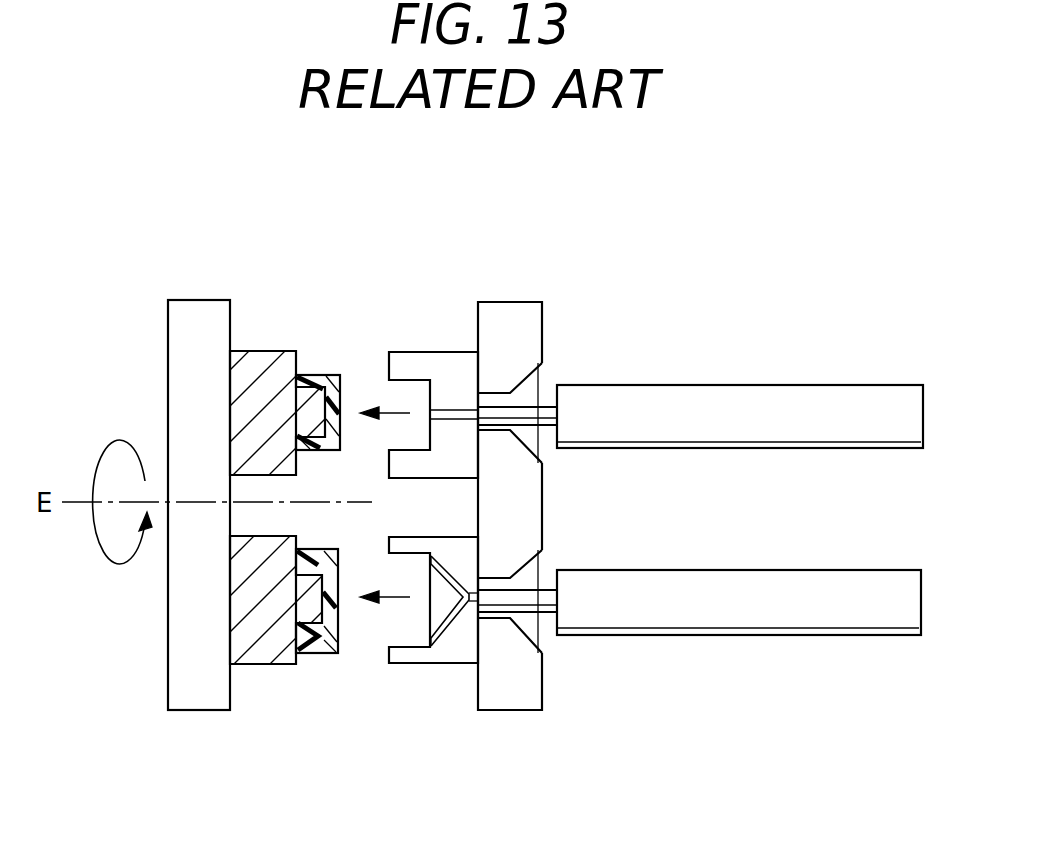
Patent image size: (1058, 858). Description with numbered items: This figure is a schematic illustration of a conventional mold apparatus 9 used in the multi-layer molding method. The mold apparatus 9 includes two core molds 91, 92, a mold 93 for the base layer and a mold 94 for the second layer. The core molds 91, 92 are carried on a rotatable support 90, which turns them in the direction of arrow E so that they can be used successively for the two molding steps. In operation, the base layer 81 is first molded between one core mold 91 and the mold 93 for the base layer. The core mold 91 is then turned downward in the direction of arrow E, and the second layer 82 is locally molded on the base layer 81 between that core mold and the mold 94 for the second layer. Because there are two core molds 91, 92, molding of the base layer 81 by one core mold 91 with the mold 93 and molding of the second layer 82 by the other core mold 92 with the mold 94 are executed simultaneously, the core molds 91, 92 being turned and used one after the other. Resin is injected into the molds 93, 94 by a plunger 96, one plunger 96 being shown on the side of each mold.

The mold apparatus 9 is at (515, 272).
The rotary base plate 90 is at (177, 347).
The core mold 91 is at (276, 370).
The core mold 92 is at (273, 632).
The base layer 81 is at (330, 383).
The second layer 82 is at (320, 650).
The mold for the base layer 93 is at (446, 370).
The mold for the second layer 94 is at (452, 655).
The plunger 96 is at (767, 392).